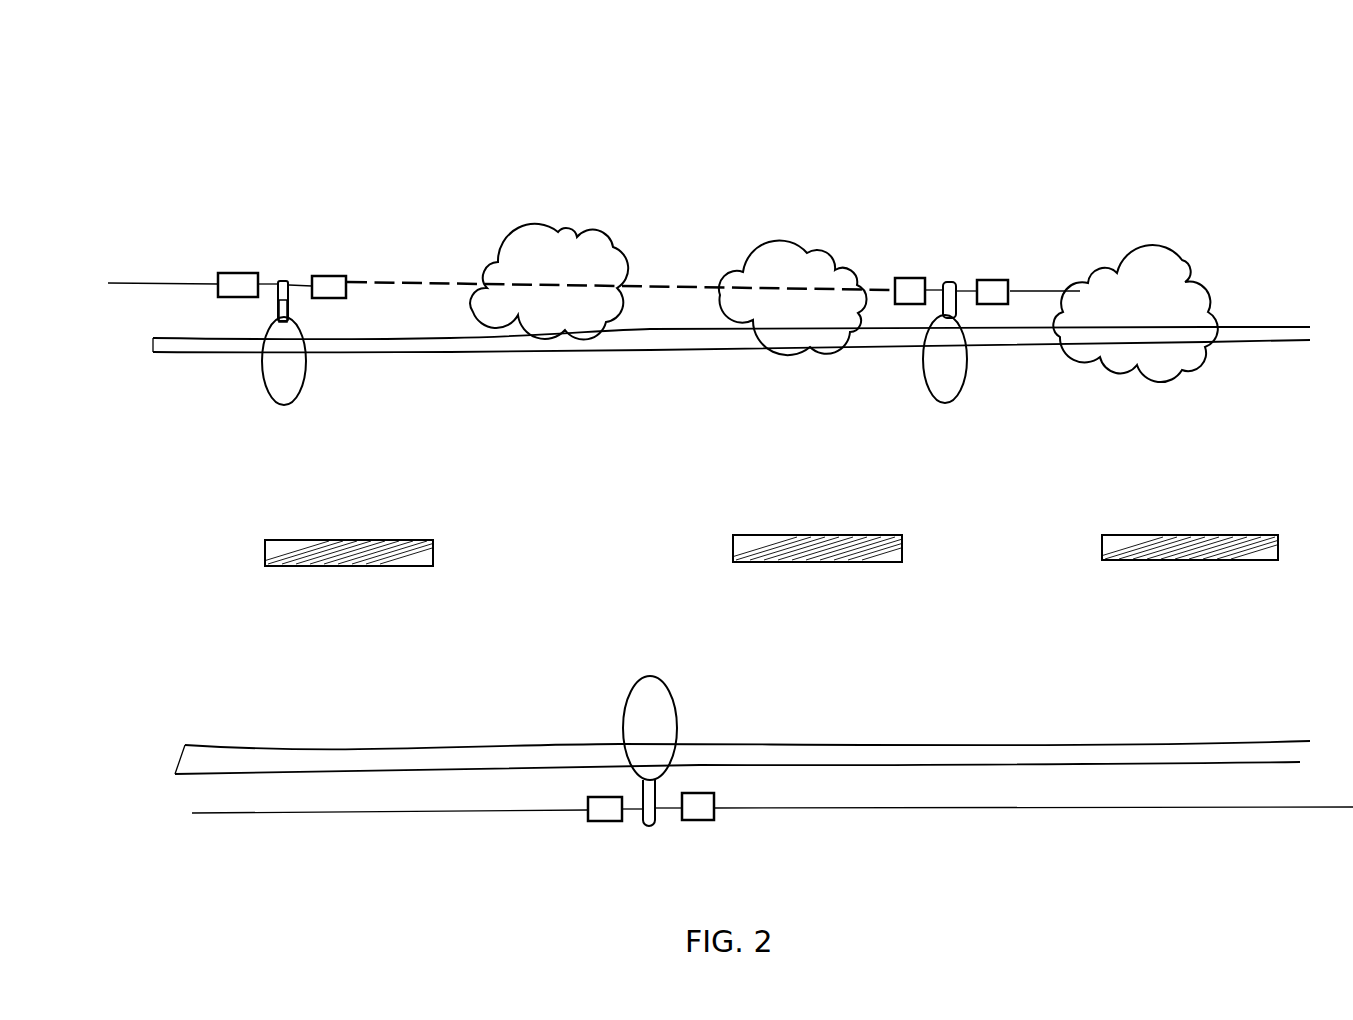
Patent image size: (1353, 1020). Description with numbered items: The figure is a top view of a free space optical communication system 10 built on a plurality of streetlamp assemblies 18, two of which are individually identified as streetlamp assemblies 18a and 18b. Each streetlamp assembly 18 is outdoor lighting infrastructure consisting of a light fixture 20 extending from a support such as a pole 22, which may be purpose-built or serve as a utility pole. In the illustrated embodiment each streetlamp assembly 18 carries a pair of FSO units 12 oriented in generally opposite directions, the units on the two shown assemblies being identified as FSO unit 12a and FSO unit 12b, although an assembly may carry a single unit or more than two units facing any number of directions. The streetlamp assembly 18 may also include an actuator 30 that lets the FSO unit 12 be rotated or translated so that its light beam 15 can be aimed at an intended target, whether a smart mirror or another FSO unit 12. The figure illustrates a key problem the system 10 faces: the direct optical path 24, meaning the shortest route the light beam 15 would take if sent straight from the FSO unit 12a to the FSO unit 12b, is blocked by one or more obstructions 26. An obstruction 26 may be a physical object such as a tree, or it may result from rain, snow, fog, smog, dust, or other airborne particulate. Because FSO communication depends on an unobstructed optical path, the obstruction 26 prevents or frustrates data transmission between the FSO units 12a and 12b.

The free space optical communication system 10 is at (104, 186).
The FSO unit 12 is at (233, 271).
The FSO unit 12a is at (328, 281).
The FSO unit 12b is at (908, 292).
The light beam 15 is at (146, 283).
The streetlamp assembly 18 is at (572, 702).
The streetlamp assembly 18a is at (172, 402).
The streetlamp assembly 18b is at (988, 433).
The light fixture 20 is at (270, 393).
The pole 22 is at (285, 302).
The direct optical path 24 is at (660, 285).
The obstruction 26 is at (543, 318).
The actuator 30 is at (295, 281).